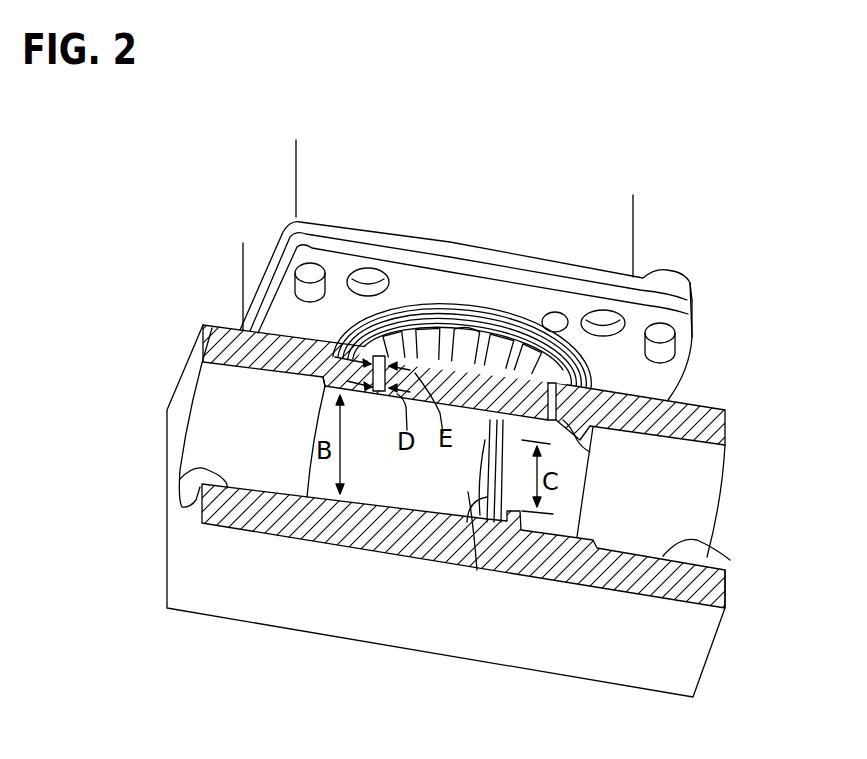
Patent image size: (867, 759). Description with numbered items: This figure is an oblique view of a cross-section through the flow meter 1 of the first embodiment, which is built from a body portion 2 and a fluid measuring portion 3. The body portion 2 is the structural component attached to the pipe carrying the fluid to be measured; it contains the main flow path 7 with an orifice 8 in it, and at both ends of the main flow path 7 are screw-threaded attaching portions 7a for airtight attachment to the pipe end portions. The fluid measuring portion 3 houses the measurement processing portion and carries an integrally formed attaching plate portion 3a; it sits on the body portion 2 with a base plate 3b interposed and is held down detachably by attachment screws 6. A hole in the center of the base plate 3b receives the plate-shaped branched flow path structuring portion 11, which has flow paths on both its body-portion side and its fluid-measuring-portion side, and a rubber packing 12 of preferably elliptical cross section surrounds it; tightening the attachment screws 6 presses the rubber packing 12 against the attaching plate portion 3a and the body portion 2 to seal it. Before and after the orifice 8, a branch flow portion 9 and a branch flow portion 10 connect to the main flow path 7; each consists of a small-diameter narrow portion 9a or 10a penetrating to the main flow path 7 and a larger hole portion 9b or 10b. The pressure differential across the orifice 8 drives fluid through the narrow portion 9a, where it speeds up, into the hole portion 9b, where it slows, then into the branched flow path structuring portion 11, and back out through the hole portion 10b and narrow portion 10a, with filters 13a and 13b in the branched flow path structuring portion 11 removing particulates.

The flow meter 1 is at (672, 207).
The body portion 2 is at (694, 657).
The fluid measuring portion 3 is at (597, 220).
The attaching plate portion 3a is at (692, 297).
The base plate 3b is at (692, 320).
The attachment screws 6 is at (305, 280).
The main flow path 7 is at (381, 494).
The attaching portions 7a is at (180, 479).
The orifice 8 is at (470, 570).
The branch flow portion 9 is at (245, 337).
The narrow portion 9a is at (377, 393).
The hole portion 9b is at (322, 380).
The branch flow portion 10 is at (625, 397).
The narrow portion 10a is at (585, 455).
The hole portion 10b is at (600, 405).
The branched flow path structuring portion 11 is at (470, 362).
The rubber packing 12 is at (433, 305).
The filter 13a is at (407, 343).
The filter 13b is at (517, 357).